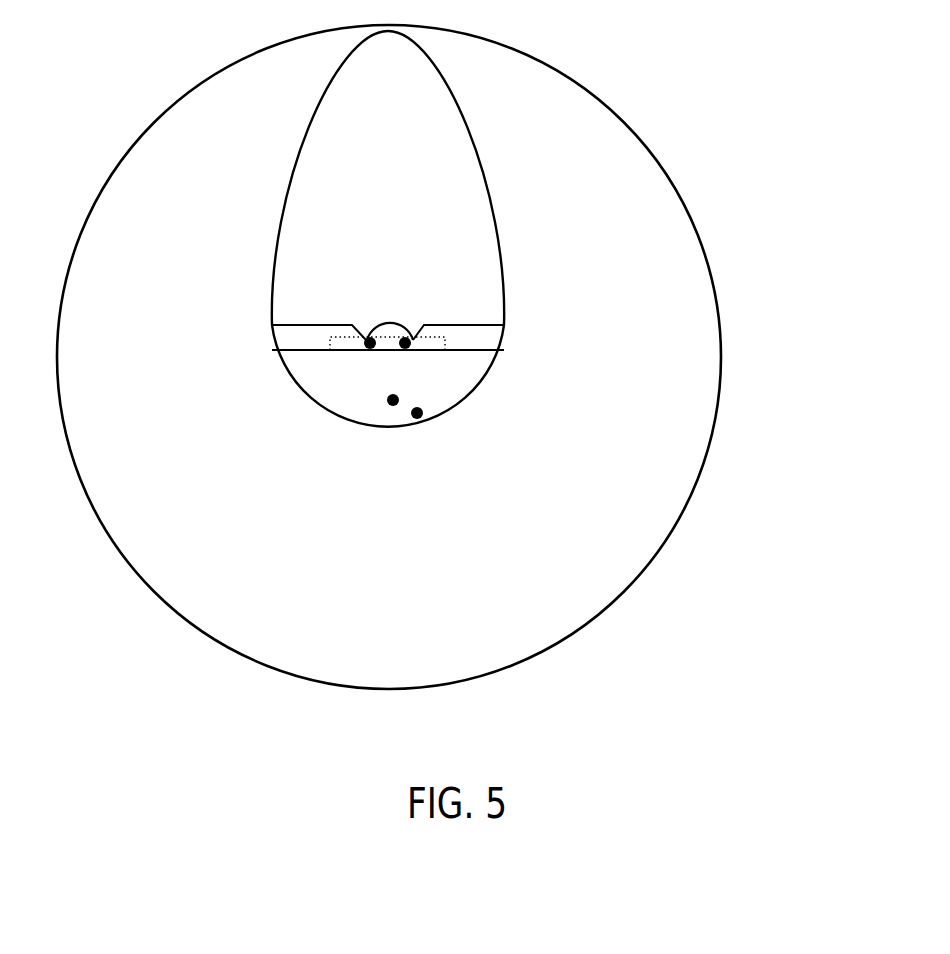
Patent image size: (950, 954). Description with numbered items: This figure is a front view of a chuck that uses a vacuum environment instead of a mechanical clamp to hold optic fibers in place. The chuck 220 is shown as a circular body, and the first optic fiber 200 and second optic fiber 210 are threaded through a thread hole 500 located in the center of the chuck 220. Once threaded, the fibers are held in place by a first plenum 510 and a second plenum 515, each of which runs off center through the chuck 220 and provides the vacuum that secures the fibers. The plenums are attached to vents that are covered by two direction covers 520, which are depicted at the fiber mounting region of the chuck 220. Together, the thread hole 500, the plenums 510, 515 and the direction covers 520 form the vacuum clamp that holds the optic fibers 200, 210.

The chuck 220 is at (190, 88).
The direction cover 520 is at (305, 325).
The thread hole 500 is at (398, 317).
The second optic fiber 210 is at (371, 341).
The first optic fiber 200 is at (407, 343).
The first plenum 510 is at (390, 402).
The second plenum 515 is at (423, 413).